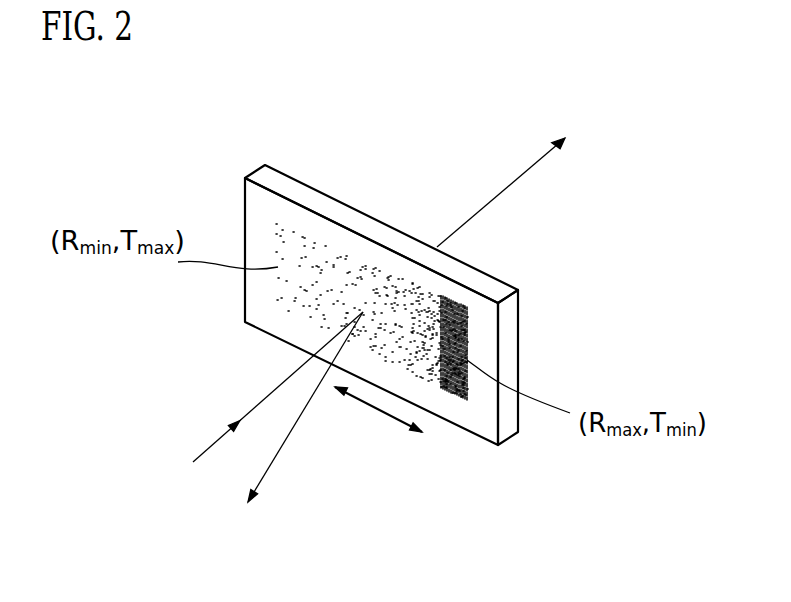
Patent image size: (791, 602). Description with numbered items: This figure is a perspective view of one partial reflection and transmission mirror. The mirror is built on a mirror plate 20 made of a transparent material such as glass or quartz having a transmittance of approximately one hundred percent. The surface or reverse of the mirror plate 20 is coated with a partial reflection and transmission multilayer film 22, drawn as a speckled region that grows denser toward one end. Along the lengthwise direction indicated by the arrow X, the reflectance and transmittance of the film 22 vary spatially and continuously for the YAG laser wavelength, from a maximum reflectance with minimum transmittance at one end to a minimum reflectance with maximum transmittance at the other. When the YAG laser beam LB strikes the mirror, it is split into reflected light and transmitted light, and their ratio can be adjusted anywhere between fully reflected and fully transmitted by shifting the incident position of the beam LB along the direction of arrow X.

The mirror plate 20 is at (290, 177).
The partial reflection and transmission multilayer film 22 is at (443, 305).
The YAG laser beam LB is at (261, 402).
The arrow X is at (378, 417).